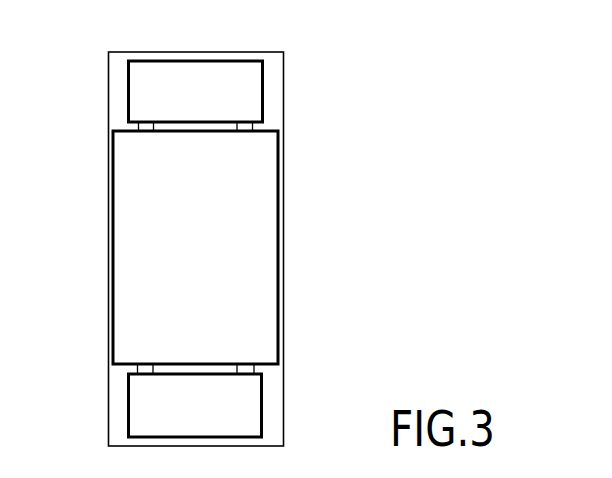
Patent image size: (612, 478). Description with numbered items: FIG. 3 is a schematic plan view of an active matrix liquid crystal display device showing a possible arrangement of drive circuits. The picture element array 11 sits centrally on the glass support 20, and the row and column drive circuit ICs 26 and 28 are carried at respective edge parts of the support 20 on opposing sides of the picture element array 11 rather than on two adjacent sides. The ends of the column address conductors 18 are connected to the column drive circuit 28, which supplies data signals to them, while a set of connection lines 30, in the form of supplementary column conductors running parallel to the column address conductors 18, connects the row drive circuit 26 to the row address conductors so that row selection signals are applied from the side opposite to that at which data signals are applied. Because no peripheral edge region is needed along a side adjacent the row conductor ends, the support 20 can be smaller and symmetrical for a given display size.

The support 20 is at (284, 76).
The matrix array 11 is at (275, 131).
The column drive circuit 28 is at (243, 68).
The column address conductors 18 is at (133, 125).
The connection lines 30 is at (128, 370).
The row drive circuit 26 is at (262, 393).